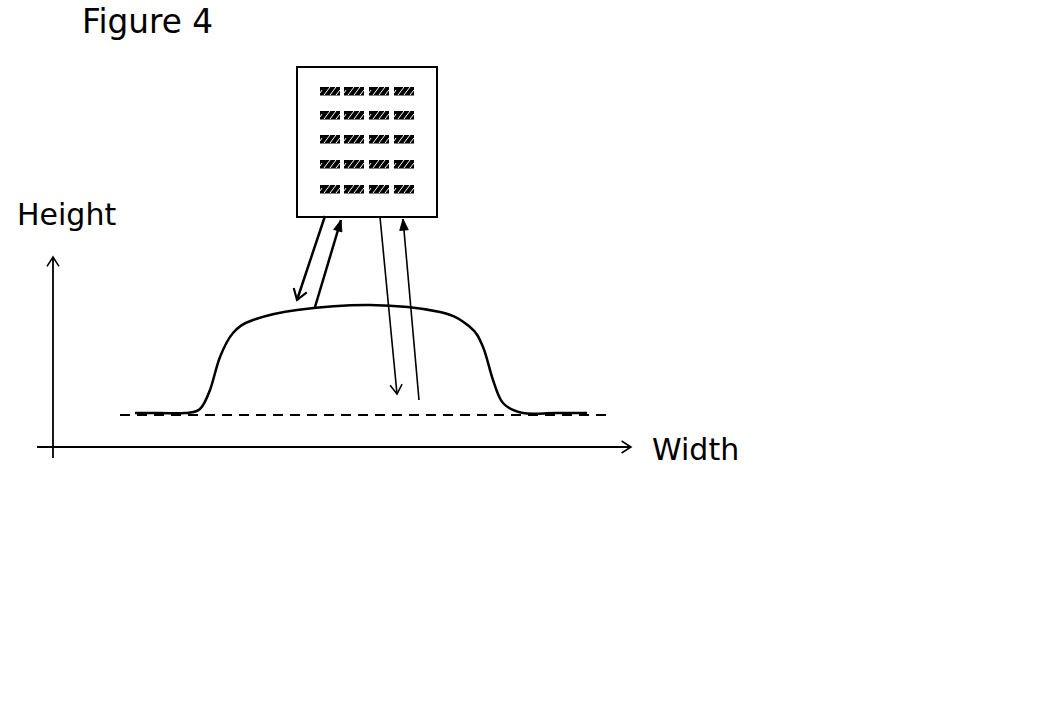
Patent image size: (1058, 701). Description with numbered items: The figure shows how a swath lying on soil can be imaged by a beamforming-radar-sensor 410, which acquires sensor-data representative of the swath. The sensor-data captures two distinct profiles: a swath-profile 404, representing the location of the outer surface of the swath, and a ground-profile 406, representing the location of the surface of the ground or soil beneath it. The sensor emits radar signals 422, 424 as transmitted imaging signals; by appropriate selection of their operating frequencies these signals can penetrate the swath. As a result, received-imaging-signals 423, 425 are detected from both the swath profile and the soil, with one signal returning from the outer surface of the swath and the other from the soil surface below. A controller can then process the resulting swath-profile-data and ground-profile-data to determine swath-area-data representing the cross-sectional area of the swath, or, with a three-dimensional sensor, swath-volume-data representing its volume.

The beamforming-radar-sensor 410 is at (437, 113).
The radar signal 422 is at (320, 238).
The received-imaging-signal 423 is at (327, 273).
The radar signal 424 is at (383, 245).
The received-imaging-signal 425 is at (407, 275).
The swath-profile 404 is at (504, 356).
The ground-profile 406 is at (250, 424).